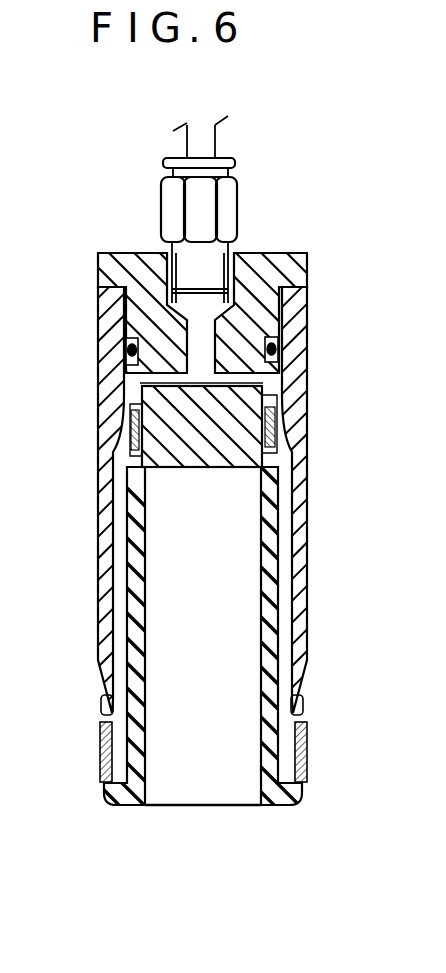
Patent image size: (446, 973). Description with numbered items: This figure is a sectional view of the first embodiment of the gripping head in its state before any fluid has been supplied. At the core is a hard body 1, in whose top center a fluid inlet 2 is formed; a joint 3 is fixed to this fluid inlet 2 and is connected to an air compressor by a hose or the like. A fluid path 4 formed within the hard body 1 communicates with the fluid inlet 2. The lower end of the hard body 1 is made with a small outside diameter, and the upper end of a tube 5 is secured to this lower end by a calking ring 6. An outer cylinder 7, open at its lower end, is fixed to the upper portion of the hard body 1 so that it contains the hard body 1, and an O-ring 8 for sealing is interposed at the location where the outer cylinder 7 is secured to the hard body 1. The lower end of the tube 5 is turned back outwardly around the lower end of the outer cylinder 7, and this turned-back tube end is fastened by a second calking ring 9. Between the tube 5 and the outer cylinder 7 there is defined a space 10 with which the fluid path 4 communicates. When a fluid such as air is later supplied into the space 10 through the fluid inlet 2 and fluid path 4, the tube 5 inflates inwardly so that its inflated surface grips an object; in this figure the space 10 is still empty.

The hard body 1 is at (296, 272).
The fluid inlet 2 is at (232, 276).
The joint 3 is at (233, 204).
The fluid path 4 is at (255, 382).
The tube 5 is at (278, 536).
The calking ring 6 is at (278, 430).
The outer cylinder 7 is at (309, 622).
The O-ring 8 is at (278, 352).
The calking ring 9 is at (308, 742).
The space 10 is at (118, 545).